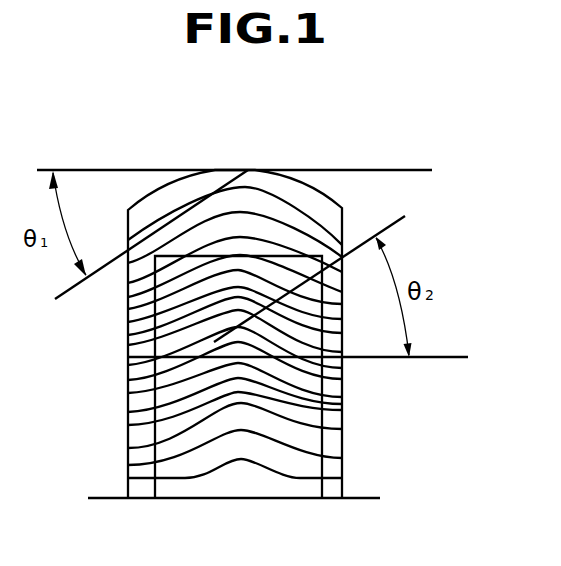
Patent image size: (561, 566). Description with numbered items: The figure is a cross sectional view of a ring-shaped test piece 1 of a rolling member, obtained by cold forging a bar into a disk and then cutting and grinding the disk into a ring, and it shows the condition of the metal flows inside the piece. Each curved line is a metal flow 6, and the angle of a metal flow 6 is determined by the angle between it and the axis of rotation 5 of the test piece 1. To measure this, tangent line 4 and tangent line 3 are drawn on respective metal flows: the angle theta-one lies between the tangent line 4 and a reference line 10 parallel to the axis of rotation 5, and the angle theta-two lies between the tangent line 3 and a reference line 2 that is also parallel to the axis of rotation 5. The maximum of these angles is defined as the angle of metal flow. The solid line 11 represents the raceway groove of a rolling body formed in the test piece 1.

The ring-shaped test piece 1 is at (118, 406).
The reference line 2 is at (438, 357).
The tangent line 3 is at (392, 219).
The tangent line 4 is at (80, 283).
The axis of rotation 5 is at (360, 500).
The metal flow 6 is at (298, 208).
The reference line 10 is at (432, 170).
The raceway groove 11 is at (323, 465).